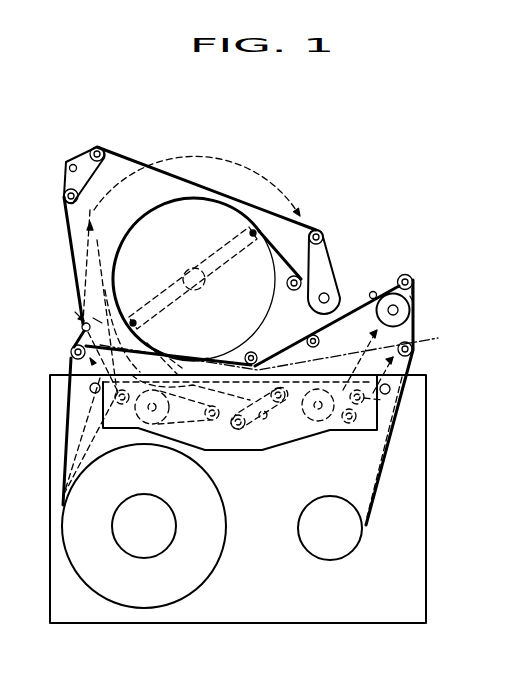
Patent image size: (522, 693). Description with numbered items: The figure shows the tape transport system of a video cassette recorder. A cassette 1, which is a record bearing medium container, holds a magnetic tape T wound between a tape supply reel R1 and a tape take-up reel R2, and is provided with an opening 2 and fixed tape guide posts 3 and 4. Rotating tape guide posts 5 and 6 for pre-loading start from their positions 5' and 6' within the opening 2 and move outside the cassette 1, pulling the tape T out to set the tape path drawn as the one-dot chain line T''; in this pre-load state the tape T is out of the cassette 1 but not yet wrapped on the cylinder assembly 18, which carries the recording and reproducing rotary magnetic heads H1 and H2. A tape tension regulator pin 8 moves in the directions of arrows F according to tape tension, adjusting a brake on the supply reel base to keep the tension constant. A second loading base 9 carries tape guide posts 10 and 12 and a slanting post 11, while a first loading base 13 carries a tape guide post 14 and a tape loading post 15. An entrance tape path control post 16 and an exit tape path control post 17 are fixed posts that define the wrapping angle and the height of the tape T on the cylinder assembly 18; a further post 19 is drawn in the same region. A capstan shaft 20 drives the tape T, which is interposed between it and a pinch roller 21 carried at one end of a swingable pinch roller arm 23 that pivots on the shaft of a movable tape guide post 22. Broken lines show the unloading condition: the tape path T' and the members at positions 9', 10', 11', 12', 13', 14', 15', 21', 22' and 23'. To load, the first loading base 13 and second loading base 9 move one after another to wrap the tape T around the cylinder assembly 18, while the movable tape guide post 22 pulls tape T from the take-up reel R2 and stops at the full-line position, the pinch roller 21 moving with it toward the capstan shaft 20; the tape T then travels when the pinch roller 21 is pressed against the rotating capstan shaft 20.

The cassette 1 is at (428, 527).
The opening 2 is at (270, 452).
The fixed tape guide post 3 is at (90, 390).
The fixed tape guide post 4 is at (391, 389).
The rotating tape guide post for pre-loading 5 is at (54, 348).
The rotating tape guide post for pre-loading 6 is at (439, 356).
The tape tension regulator pin 8 is at (81, 326).
The second loading base 9 is at (62, 175).
The tape guide post 10 is at (47, 209).
The slanting post 11 is at (50, 154).
The tape guide post 12 is at (96, 125).
The first loading base 13 is at (342, 269).
The tape guide post 14 is at (328, 212).
The tape loading post 15 is at (372, 276).
The entrance tape path control post 16 is at (293, 276).
The exit tape path control post 17 is at (257, 352).
The cylinder assembly 18 is at (142, 215).
The roller 19 is at (313, 335).
The capstan shaft 20 is at (398, 278).
The pinch roller 21 is at (418, 309).
The movable tape guide post 22 is at (430, 262).
The pinch roller arm 23 is at (433, 283).
The magnetic tape T is at (218, 336).
The tape path under unloading condition T' is at (263, 424).
The pre-load tape path T'' is at (279, 347).
The arrows of tension regulator pin movement F is at (88, 307).
The rotary magnetic head H1 is at (131, 316).
The rotary magnetic head H2 is at (245, 232).
The tape supply reel R1 is at (143, 553).
The tape take-up reel R2 is at (327, 553).
The position of pre-loading post 5 within cassette opening 5' is at (105, 422).
The position of pre-loading post 6 within cassette opening 6' is at (411, 417).
The second loading base under unloading condition 9' is at (259, 437).
The tape guide post under unloading condition 10' is at (278, 443).
The slanting post under unloading condition 11' is at (279, 446).
The tape guide post under unloading condition 12' is at (255, 449).
The first loading base under unloading condition 13' is at (180, 439).
The tape guide post under unloading condition 14' is at (221, 444).
The tape loading post under unloading condition 15' is at (142, 438).
The pinch roller under unloading condition 21' is at (324, 440).
The movable tape guide post under unloading condition 22' is at (386, 421).
The pinch roller arm under unloading condition 23' is at (352, 436).